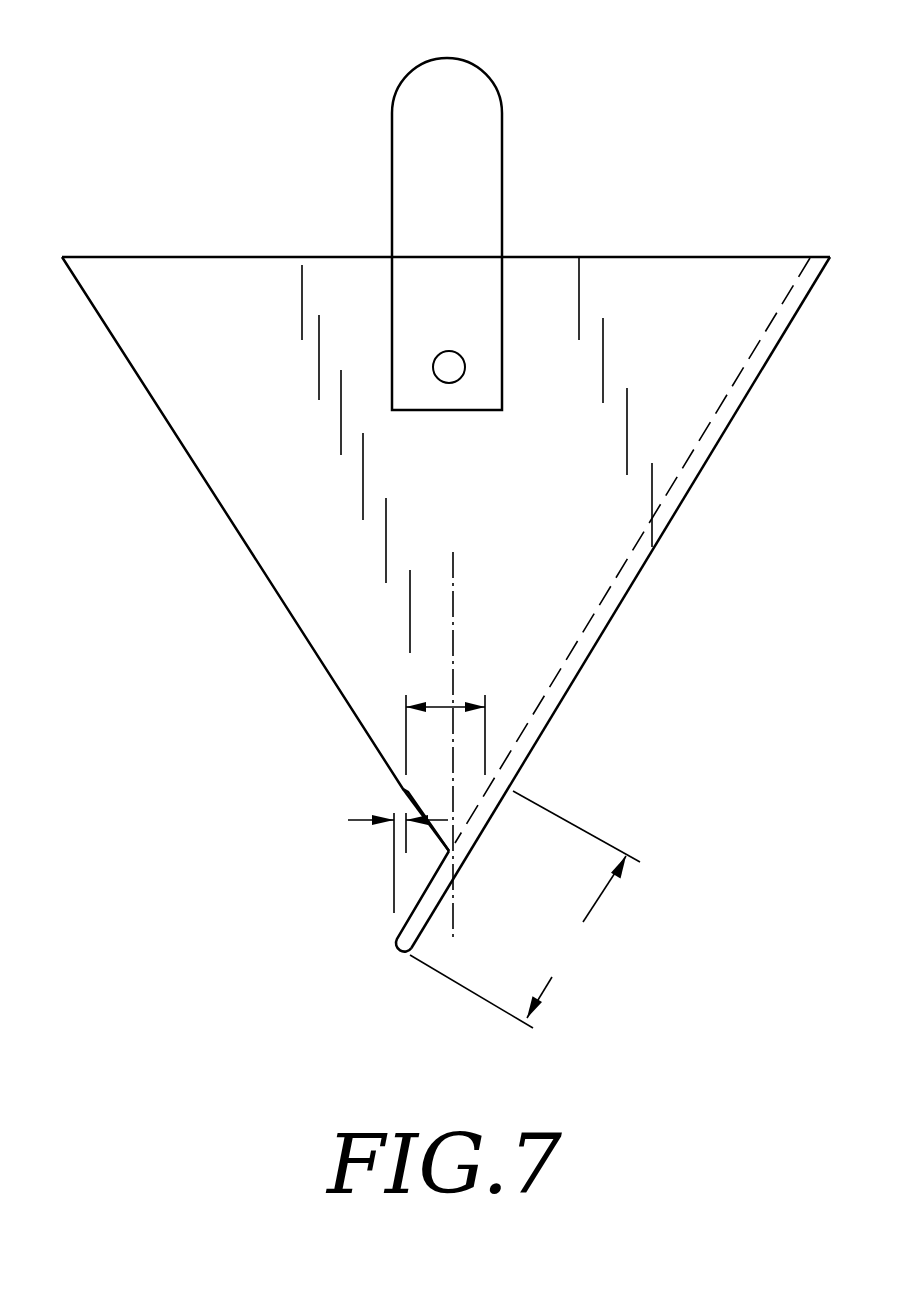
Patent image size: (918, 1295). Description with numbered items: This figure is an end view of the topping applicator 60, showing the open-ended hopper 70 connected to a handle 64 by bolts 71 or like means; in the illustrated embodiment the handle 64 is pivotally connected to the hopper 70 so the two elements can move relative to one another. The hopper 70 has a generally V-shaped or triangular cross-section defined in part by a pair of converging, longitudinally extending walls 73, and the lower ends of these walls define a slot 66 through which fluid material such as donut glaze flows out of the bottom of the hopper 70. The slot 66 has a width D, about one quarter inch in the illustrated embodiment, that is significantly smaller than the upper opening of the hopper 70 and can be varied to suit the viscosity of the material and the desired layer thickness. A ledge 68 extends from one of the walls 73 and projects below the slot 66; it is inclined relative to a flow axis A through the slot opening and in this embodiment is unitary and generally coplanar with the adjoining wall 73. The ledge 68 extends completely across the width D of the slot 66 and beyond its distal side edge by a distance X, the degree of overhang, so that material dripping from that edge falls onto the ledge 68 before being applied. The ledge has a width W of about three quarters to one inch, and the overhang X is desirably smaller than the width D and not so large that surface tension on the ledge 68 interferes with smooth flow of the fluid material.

The topping applicator 60 is at (245, 136).
The handle 64 is at (390, 195).
The slot 66 is at (428, 779).
The ledge 68 is at (423, 937).
The hopper 70 is at (680, 297).
The bolts 71 is at (435, 354).
The walls 73 is at (201, 485).
The flow axis A is at (452, 577).
The width of the slot D is at (447, 706).
The degree of overhang X is at (376, 851).
The width of the ledge W is at (525, 909).